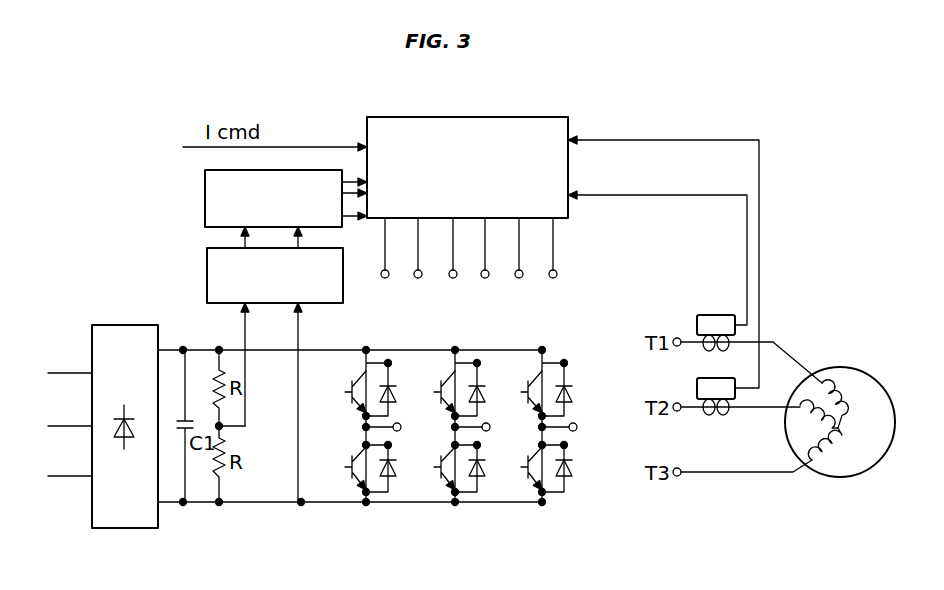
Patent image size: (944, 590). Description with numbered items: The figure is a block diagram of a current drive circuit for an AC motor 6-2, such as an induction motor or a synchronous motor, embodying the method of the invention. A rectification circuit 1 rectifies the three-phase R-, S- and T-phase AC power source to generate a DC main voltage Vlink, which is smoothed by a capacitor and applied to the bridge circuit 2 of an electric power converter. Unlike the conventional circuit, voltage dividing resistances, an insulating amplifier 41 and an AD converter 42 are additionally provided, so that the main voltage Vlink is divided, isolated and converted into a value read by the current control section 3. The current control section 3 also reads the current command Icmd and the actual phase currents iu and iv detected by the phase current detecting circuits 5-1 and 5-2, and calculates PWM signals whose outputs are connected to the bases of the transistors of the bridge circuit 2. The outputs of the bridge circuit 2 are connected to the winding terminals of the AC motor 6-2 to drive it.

The rectification circuit 1 is at (113, 325).
The bridge circuit 2 is at (421, 531).
The current control section 3 is at (459, 117).
The insulating amplifier 41 is at (207, 276).
The AD converter 42 is at (205, 198).
The phase current detecting circuit 5-1 is at (699, 315).
The phase current detecting circuit 5-2 is at (700, 378).
The AC motor 6-2 is at (838, 367).